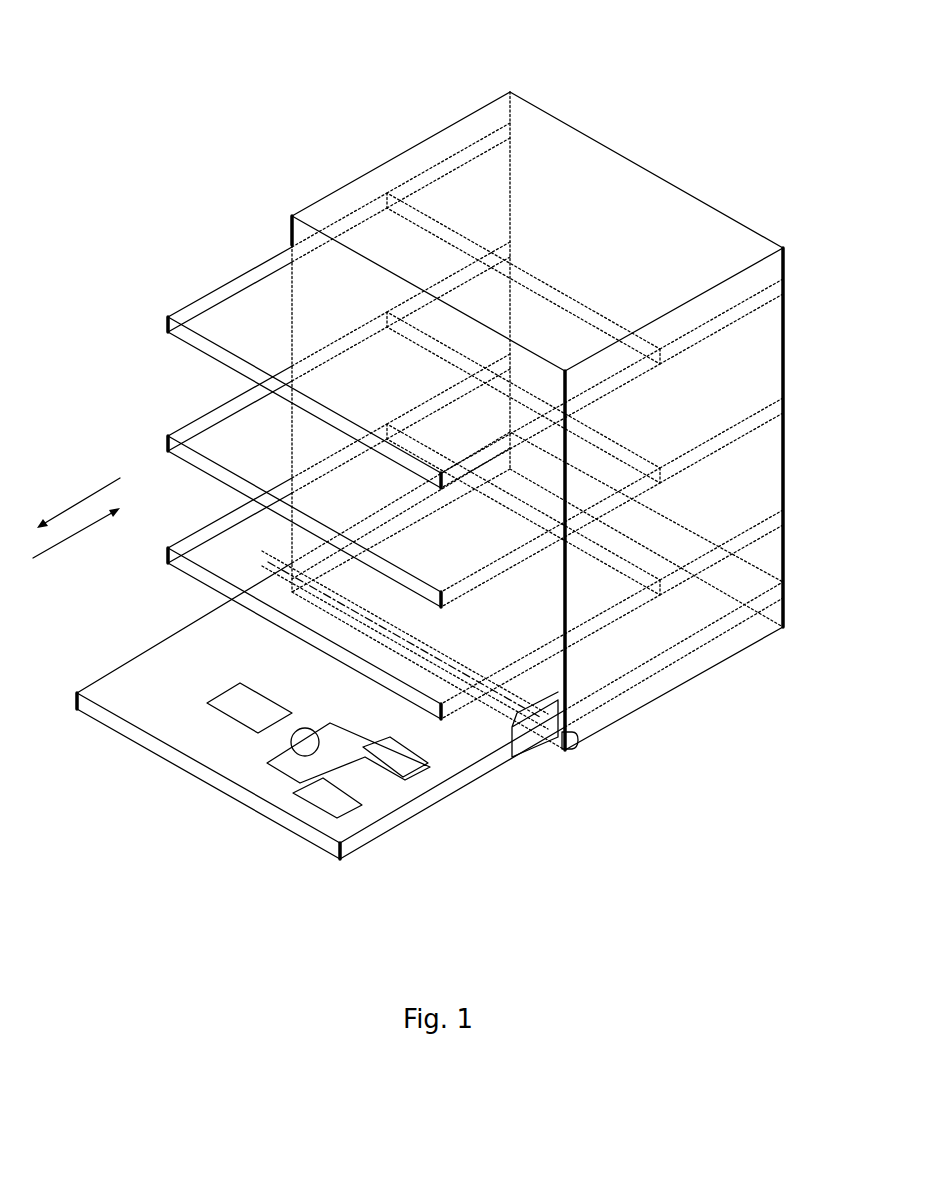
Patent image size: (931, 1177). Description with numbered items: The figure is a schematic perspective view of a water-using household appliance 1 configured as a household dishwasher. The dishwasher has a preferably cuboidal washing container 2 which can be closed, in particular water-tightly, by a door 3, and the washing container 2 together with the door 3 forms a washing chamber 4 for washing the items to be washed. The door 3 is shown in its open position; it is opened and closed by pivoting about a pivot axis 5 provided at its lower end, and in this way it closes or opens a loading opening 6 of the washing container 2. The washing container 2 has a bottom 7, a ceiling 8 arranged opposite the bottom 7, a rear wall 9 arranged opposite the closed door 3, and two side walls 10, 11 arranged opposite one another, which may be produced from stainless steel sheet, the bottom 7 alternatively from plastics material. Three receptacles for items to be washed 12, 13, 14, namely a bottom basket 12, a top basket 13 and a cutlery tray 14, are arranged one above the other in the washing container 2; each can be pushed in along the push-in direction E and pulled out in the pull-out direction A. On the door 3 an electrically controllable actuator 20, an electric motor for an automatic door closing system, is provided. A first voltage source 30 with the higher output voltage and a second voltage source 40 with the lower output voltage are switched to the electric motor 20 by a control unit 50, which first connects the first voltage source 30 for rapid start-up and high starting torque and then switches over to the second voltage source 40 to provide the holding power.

The water-using household appliance 1 is at (340, 94).
The washing container 2 is at (332, 194).
The door 3 is at (166, 666).
The washing chamber 4 is at (585, 359).
The pivot axis 5 is at (578, 745).
The loading opening 6 is at (545, 671).
The bottom 7 is at (662, 640).
The ceiling 8 is at (565, 140).
The rear wall 9 is at (676, 203).
The side wall 10 is at (420, 165).
The side wall 11 is at (753, 372).
The receptacle for items to be washed 12 is at (190, 546).
The receptacle for items to be washed 13 is at (200, 426).
The receptacle for items to be washed 14 is at (242, 302).
The electrically controllable actuator 20 is at (225, 718).
The first voltage source 30 is at (432, 768).
The second voltage source 40 is at (356, 823).
The control unit 50 is at (291, 740).